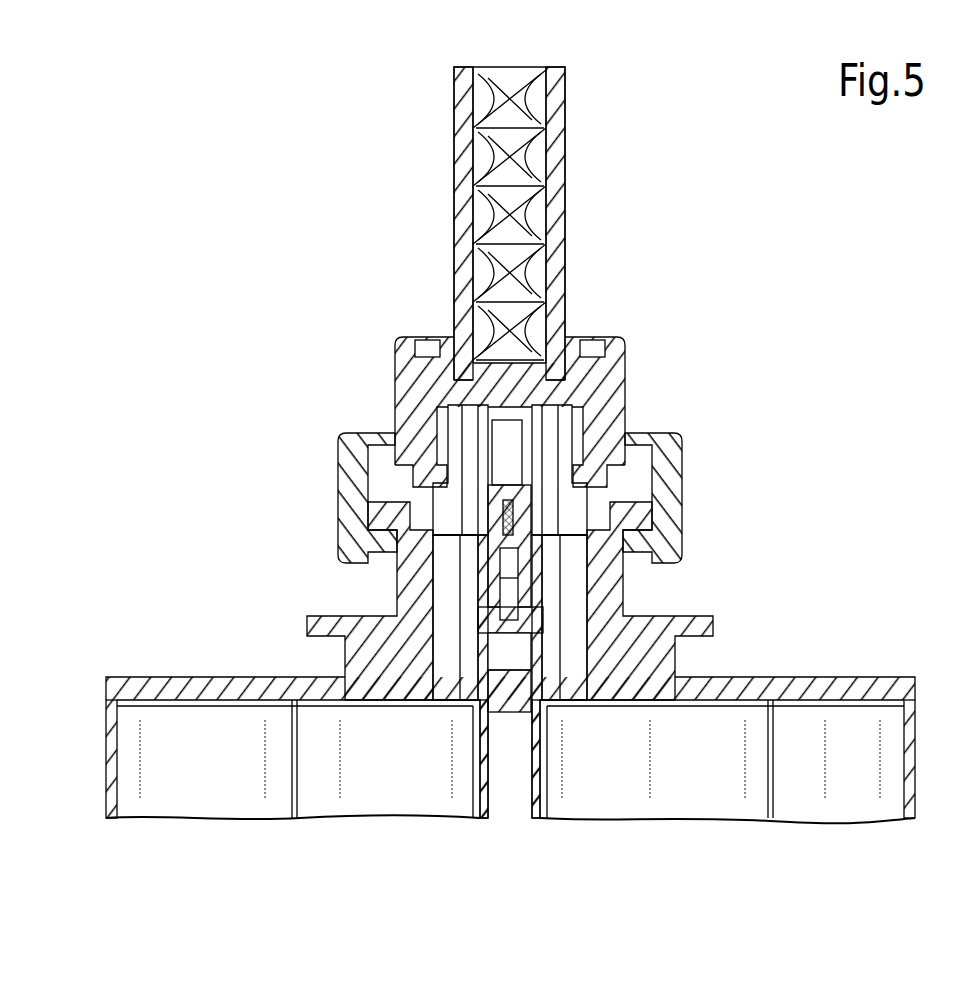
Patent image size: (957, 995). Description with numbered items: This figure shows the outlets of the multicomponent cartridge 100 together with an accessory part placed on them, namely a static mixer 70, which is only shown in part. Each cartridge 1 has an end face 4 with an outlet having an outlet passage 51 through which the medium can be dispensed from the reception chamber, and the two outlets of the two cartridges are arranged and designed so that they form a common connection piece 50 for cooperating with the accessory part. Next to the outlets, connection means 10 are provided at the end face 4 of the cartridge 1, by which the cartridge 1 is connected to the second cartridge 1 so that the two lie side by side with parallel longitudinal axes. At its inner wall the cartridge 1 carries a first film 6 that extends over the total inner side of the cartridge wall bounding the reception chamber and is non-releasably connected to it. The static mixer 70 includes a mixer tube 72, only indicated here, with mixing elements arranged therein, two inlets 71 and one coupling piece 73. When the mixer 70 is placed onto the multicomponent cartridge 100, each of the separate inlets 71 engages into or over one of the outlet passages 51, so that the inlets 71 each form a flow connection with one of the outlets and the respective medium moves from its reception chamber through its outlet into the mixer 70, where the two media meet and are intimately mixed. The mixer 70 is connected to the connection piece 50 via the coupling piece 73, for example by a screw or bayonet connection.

The multicomponent cartridge 100 is at (663, 128).
The mixer tube 72 is at (462, 120).
The static mixer 70 is at (578, 290).
The inlets 71 is at (474, 432).
The coupling piece 73 is at (340, 482).
The connection piece 50 is at (690, 651).
The outlet passage 51 is at (468, 590).
The connection means 10 is at (497, 712).
The end face 4 is at (152, 672).
The first film 6 is at (142, 776).
The cartridge 1 is at (510, 796).